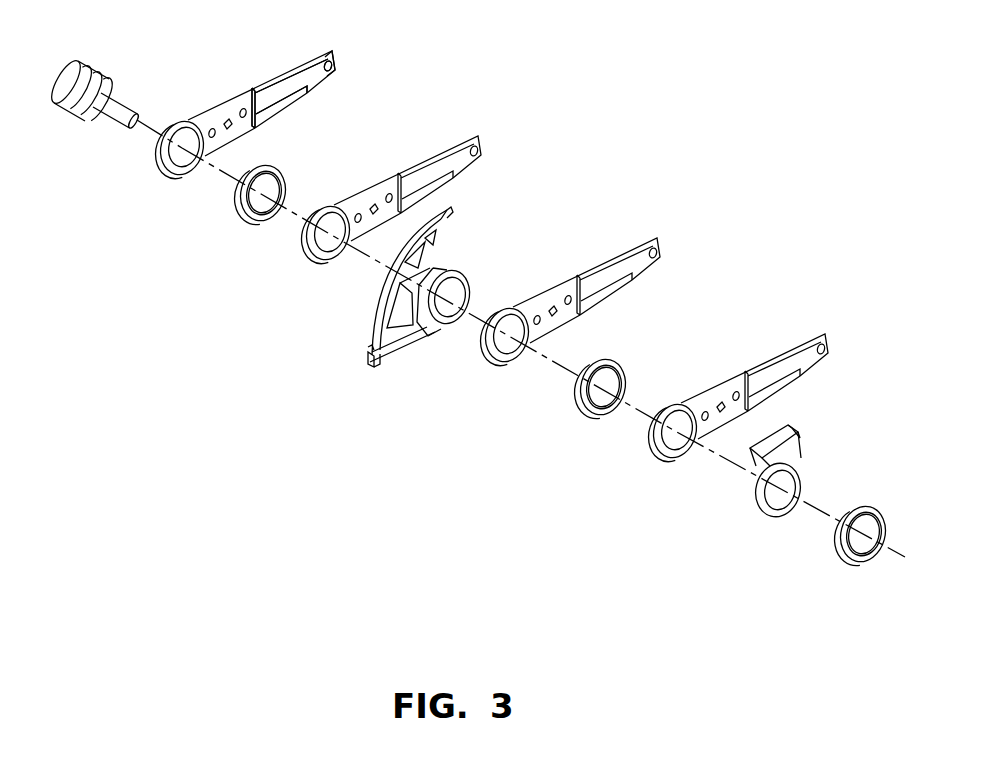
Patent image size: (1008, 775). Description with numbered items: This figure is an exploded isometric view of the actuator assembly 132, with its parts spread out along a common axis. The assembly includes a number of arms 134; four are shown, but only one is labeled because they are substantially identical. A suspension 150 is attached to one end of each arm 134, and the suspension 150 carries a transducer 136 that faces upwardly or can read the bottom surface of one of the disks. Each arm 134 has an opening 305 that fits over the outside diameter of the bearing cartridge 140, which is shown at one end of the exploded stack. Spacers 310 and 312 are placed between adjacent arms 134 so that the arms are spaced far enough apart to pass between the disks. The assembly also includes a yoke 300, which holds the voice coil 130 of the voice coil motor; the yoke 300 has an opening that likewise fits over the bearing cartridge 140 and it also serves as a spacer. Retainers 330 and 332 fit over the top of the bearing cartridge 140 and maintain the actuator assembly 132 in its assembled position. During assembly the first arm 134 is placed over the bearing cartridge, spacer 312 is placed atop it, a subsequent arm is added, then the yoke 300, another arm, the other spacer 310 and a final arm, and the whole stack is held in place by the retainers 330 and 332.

The voice coil 130 is at (372, 342).
The actuator assembly 132 is at (212, 309).
The arm 134 is at (197, 108).
The transducer 136 is at (338, 56).
The bearing cartridge 140 is at (75, 113).
The suspension 150 is at (277, 70).
The yoke 300 is at (433, 315).
The opening 305 is at (178, 178).
The spacer 310 is at (597, 420).
The spacer 312 is at (283, 163).
The retainer 330 is at (777, 517).
The retainer 332 is at (858, 563).